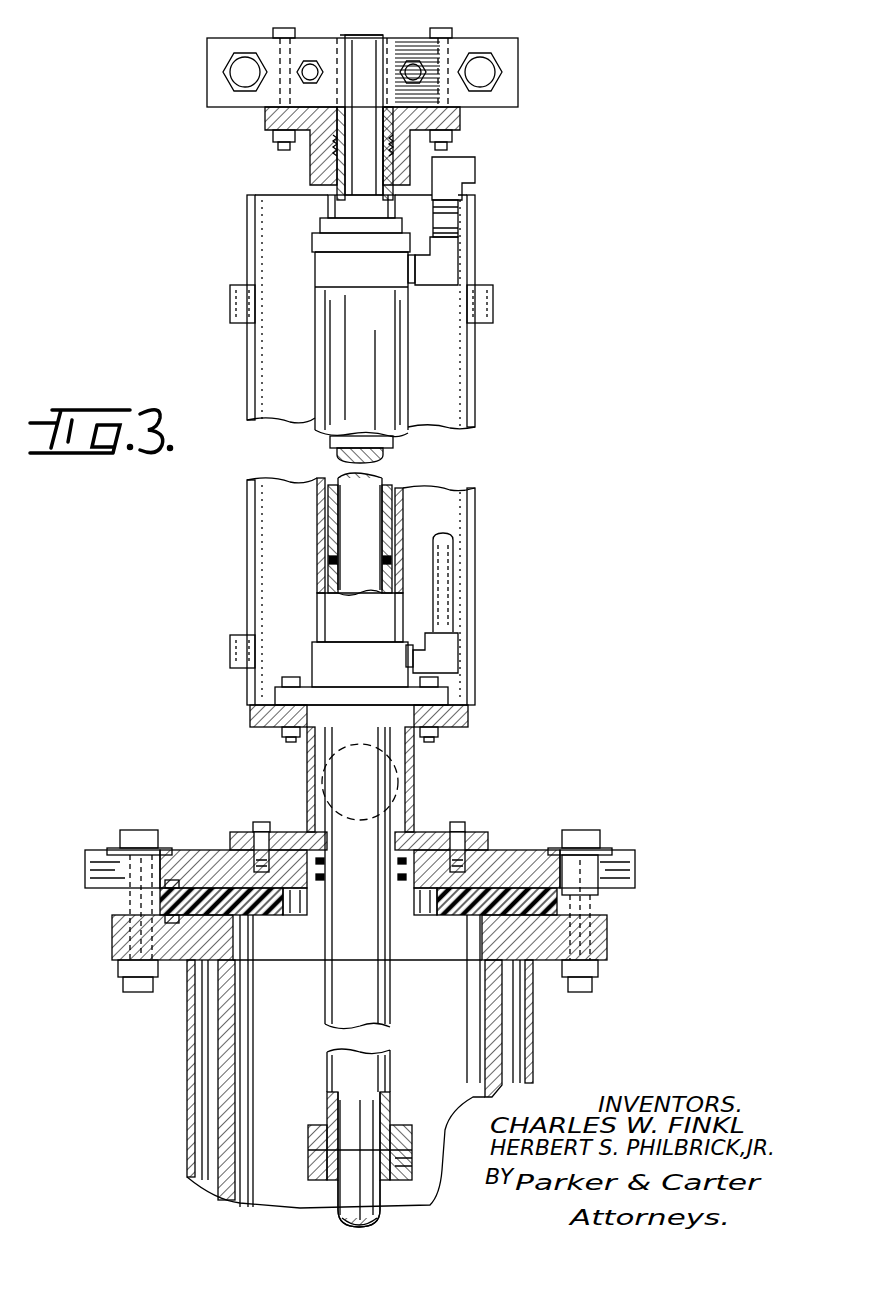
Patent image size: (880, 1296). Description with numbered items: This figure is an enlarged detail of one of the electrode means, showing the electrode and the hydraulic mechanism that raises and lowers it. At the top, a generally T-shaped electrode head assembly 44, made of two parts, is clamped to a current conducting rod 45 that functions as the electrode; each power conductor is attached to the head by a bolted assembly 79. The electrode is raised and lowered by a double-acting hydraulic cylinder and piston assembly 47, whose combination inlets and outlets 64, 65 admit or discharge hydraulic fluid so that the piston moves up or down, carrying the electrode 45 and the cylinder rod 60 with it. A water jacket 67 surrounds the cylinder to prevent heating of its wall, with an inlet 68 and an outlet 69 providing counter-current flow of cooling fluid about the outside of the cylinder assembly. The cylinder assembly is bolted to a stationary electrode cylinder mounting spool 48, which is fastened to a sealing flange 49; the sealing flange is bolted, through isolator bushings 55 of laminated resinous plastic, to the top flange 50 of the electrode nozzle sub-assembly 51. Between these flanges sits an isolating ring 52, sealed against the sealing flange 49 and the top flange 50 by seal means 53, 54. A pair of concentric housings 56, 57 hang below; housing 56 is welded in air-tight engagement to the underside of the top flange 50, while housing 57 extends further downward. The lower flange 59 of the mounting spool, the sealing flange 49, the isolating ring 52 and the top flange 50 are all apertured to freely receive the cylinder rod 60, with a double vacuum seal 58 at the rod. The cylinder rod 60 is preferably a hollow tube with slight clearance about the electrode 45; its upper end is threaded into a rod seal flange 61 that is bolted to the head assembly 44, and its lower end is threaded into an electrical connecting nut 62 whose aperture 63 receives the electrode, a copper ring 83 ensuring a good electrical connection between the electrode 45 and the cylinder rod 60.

The electrode head assembly 44 is at (207, 74).
The current conducting rod 45 is at (378, 40).
The hydraulic cylinder and piston assembly 47 is at (316, 434).
The electrode cylinder mounting spool 48 is at (308, 752).
The sealing flange 49 is at (520, 850).
The top flange 50 is at (607, 950).
The electrode nozzle sub-assembly 51 is at (536, 1055).
The isolating ring 52 is at (555, 905).
The seal means 53 is at (178, 880).
The seal means 54 is at (170, 920).
The isolator bushing 55 is at (598, 870).
The housing 56 is at (186, 1082).
The housing 57 is at (225, 1200).
The double vacuum seal 58 is at (325, 876).
The lower flange 59 is at (240, 832).
The cylinder rod 60 is at (340, 984).
The rod seal flange 61 is at (318, 152).
The electrical connecting nut 62 is at (408, 1142).
The aperture 63 is at (336, 1176).
The combination inlet and outlet 64 is at (450, 258).
The combination inlet and outlet 65 is at (450, 660).
The water jacket 67 is at (475, 383).
The inlet 68 is at (230, 668).
The outlet 69 is at (230, 302).
The bolted assembly 79 is at (502, 78).
The copper ring 83 is at (332, 1170).